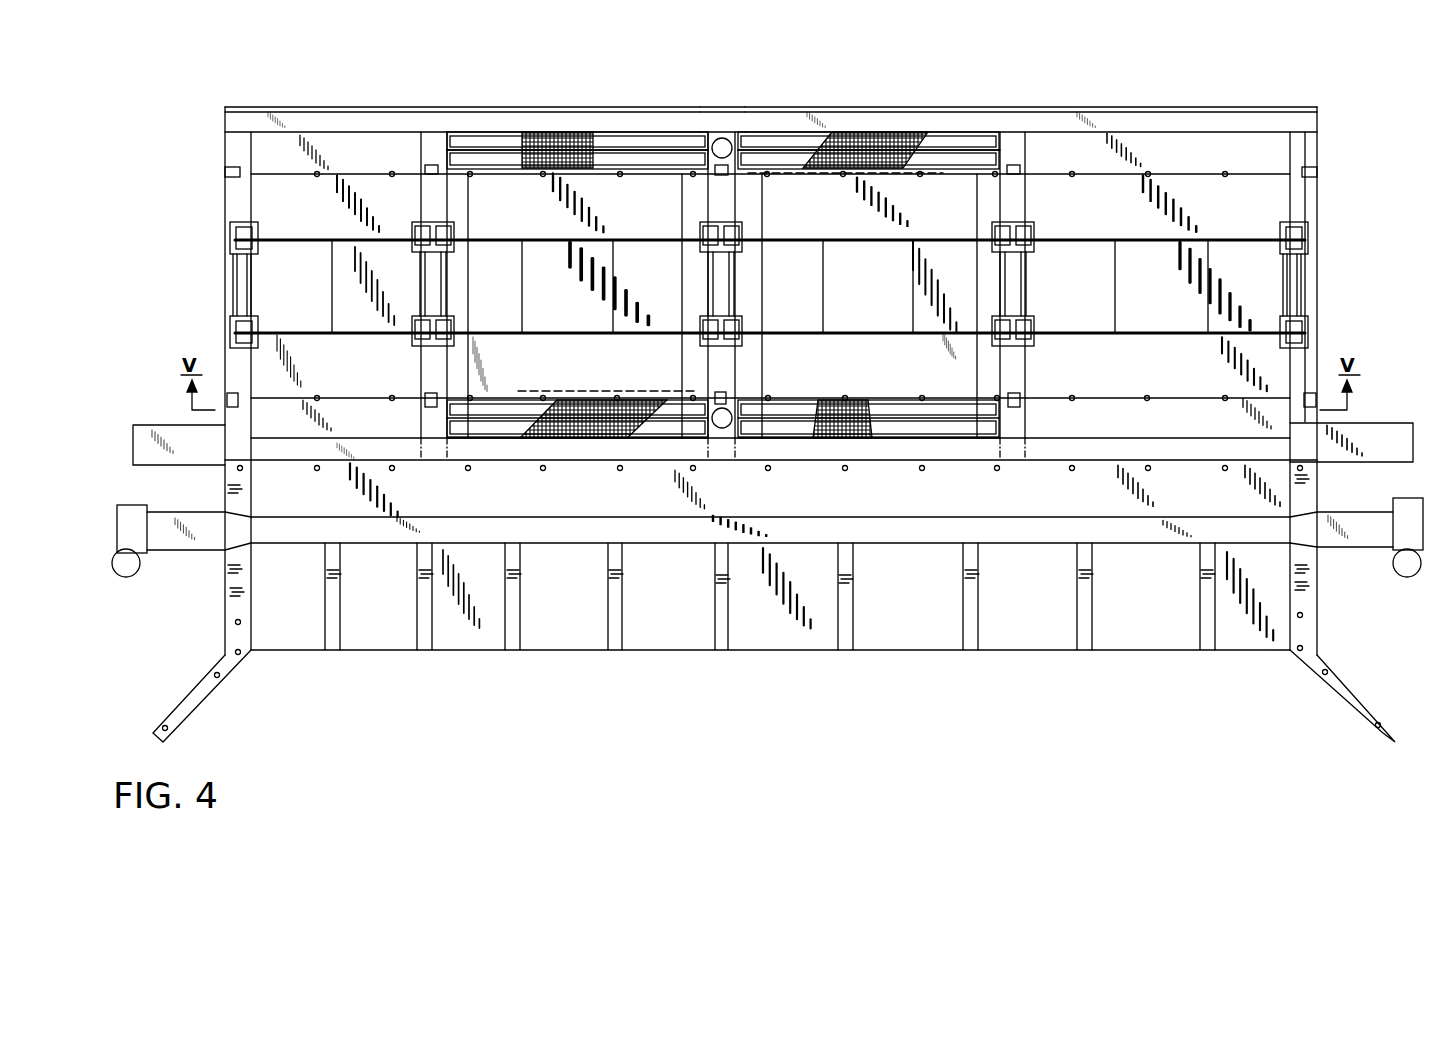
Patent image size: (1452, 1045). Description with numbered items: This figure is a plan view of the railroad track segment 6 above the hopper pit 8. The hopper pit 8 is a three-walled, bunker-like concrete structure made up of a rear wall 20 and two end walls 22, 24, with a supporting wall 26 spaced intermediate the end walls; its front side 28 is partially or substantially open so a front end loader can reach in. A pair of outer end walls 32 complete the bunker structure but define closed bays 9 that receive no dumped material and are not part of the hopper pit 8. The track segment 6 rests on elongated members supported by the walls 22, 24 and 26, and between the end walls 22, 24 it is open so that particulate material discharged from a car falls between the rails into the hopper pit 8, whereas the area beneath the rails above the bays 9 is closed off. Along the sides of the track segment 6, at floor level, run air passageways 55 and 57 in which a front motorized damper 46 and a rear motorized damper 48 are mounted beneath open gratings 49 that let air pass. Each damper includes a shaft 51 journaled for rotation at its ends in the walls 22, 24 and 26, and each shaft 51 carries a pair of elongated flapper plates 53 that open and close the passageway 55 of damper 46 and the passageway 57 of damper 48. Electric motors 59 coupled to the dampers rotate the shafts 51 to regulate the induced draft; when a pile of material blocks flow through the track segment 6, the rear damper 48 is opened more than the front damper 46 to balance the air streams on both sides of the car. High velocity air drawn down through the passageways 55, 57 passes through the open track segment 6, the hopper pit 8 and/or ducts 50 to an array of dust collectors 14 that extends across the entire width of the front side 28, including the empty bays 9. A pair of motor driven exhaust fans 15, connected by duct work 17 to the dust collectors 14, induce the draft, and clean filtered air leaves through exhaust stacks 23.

The railroad track segment 6 is at (553, 332).
The hopper pit 8 is at (503, 287).
The closed bays 9 is at (288, 152).
The dust collectors 14 is at (1198, 655).
The motor driven exhaust fans 15 is at (117, 520).
The duct work 17 is at (178, 542).
The rear wall 20 is at (713, 108).
The end wall 22 is at (425, 373).
The exhaust stacks 23 is at (123, 577).
The end wall 24 is at (1020, 380).
The supporting wall 26 is at (725, 380).
The front side 28 is at (578, 467).
The outer end walls 32 is at (237, 197).
The motorized damper 46 is at (500, 420).
The motorized damper 48 is at (608, 140).
The open grating 49 is at (540, 135).
The ducts 50 is at (470, 203).
The shaft 51 is at (470, 150).
The elongated flapper plates 53 is at (650, 140).
The air passageway 55 is at (642, 432).
The air passageway 57 is at (572, 147).
The electric motors 59 is at (732, 140).